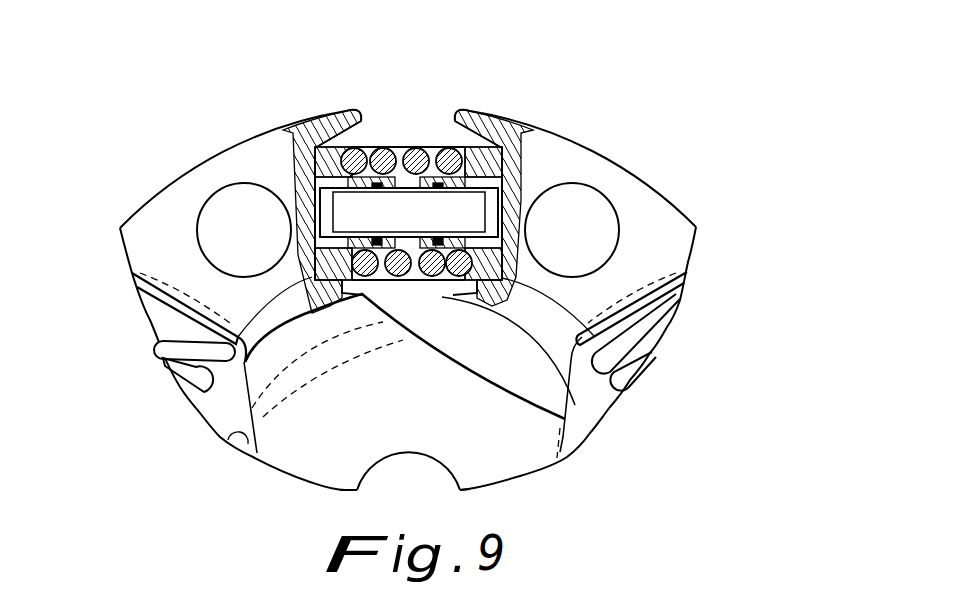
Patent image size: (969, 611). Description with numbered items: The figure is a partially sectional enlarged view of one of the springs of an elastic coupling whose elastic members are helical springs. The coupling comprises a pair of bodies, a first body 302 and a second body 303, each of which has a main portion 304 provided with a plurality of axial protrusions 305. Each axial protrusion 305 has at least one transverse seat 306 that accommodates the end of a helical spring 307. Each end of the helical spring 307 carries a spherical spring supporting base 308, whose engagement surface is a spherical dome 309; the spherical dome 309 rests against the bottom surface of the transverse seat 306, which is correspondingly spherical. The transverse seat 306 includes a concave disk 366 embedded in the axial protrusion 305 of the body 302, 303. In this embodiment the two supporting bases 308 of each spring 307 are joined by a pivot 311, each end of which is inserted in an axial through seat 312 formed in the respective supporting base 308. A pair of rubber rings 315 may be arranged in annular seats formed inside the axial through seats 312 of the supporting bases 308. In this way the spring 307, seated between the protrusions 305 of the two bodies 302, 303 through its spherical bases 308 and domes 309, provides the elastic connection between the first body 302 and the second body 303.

The first body 302 is at (193, 162).
The second body 303 is at (639, 162).
The main portion 304 is at (547, 395).
The axial protrusion 305 is at (163, 210).
The transverse seat 306 is at (348, 143).
The helical spring 307 is at (393, 282).
The spherical spring supporting base 308 is at (342, 155).
The spherical dome 309 is at (290, 132).
The pivot 311 is at (407, 203).
The axial through seat 312 is at (343, 210).
The rubber ring 315 is at (358, 285).
The concave disk 366 is at (237, 336).